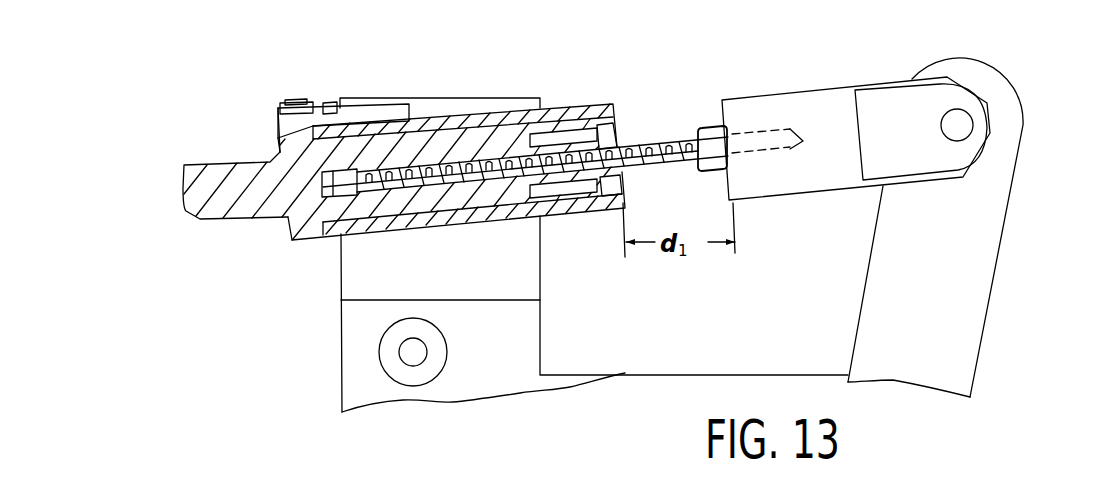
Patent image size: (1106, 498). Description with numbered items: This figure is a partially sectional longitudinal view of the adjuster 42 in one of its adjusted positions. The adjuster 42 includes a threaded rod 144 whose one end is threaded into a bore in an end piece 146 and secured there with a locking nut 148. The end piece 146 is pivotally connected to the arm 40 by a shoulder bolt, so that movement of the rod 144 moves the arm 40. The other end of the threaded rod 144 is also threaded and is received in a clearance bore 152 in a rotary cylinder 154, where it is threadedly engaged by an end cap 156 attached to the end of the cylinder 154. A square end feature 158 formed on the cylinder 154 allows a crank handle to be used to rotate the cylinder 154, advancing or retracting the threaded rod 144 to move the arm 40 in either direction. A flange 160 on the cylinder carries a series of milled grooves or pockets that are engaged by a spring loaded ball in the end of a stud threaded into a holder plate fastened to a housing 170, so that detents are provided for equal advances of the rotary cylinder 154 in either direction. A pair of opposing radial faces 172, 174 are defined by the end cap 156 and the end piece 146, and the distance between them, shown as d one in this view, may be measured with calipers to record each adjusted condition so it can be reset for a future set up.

The arm 40 is at (996, 170).
The adjuster 42 is at (520, 65).
The threaded rod 144 is at (628, 144).
The end piece 146 is at (798, 90).
The locking nut 148 is at (706, 128).
The clearance bore 152 is at (398, 168).
The rotary cylinder 154 is at (384, 208).
The end cap 156 is at (574, 108).
The square end feature 158 is at (200, 179).
The flange 160 is at (279, 163).
The housing 170 is at (453, 232).
The radial face 172 is at (618, 207).
The radial face 174 is at (716, 188).